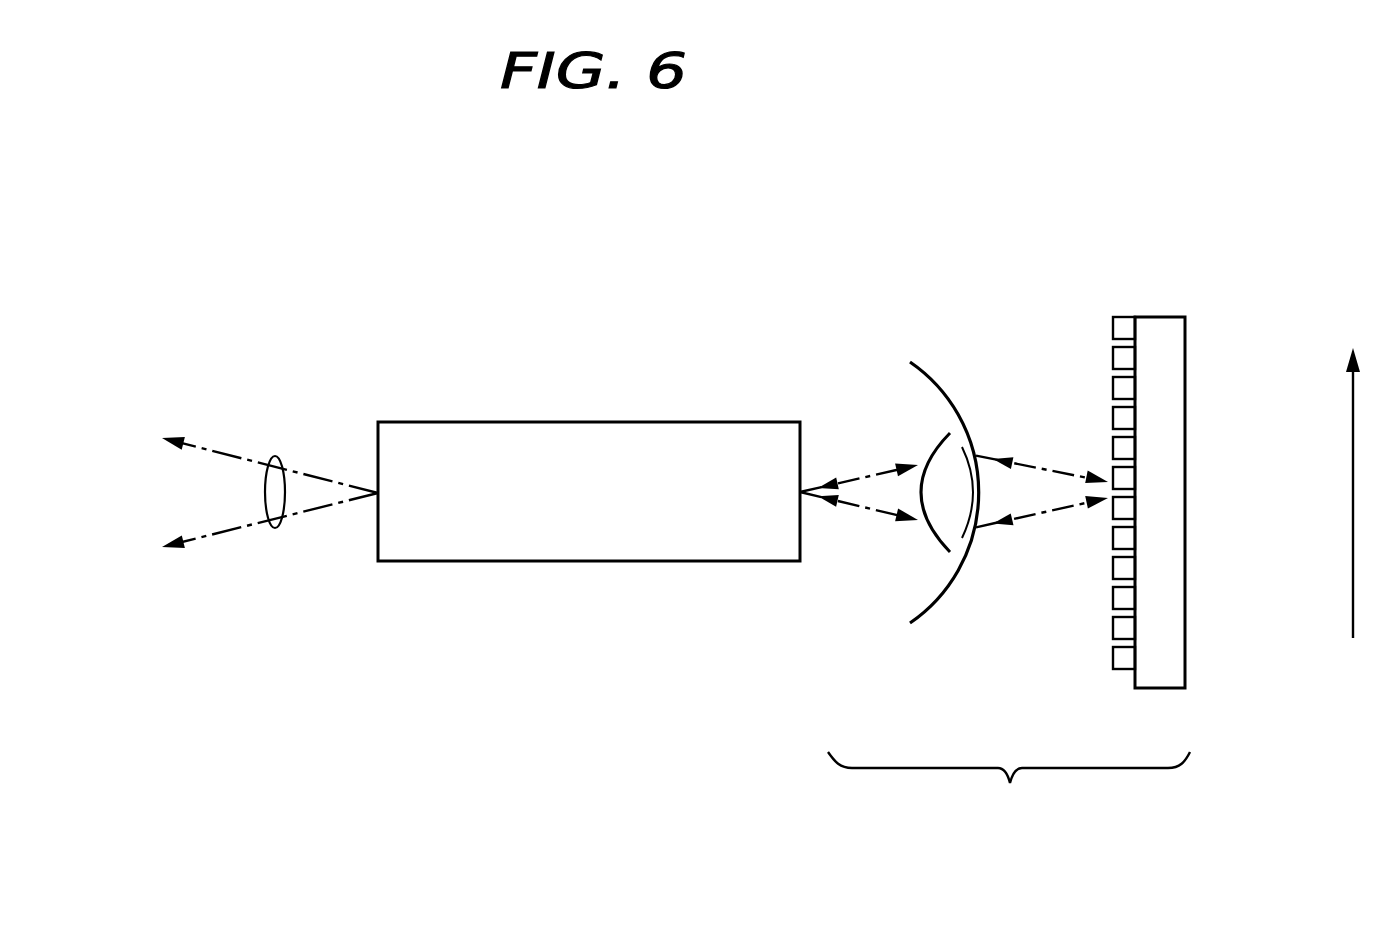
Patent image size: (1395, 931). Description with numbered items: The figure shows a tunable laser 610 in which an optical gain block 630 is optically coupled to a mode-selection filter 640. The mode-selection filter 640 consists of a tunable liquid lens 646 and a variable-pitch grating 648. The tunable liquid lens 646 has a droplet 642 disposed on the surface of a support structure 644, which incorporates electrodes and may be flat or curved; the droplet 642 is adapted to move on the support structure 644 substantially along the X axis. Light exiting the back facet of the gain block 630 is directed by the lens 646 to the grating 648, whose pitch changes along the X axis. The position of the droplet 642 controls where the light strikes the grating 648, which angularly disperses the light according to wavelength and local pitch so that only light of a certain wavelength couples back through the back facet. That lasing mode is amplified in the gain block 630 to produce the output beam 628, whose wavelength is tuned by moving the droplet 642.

The tunable laser 610 is at (613, 157).
The output beam 628 is at (275, 456).
The optical gain block 630 is at (580, 422).
The mode-selection filter 640 is at (1009, 788).
The droplet 642 is at (950, 433).
The support structure 644 is at (928, 376).
The tunable liquid lens 646 is at (930, 298).
The variable-pitch grating 648 is at (1152, 316).